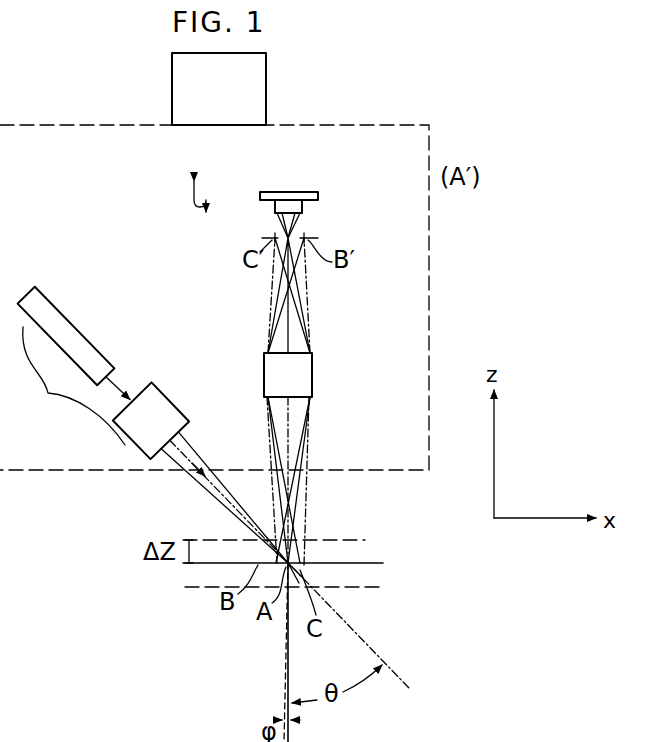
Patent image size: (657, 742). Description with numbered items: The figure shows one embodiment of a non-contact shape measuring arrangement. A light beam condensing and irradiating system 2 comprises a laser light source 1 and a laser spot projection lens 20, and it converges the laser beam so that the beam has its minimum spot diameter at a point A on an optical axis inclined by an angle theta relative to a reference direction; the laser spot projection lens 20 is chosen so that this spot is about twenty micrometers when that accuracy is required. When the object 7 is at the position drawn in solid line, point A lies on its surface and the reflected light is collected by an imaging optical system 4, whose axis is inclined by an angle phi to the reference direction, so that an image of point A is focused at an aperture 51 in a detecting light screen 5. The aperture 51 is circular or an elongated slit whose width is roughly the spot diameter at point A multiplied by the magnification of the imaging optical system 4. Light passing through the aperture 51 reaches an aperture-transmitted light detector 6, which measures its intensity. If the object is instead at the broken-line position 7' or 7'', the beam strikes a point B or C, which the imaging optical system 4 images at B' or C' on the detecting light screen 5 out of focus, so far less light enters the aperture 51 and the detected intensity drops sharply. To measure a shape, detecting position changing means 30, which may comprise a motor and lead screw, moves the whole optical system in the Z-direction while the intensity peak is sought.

The laser light source 1 is at (50, 300).
The light beam condensing and irradiating system 2 is at (74, 386).
The laser spot projection lens 20 is at (160, 384).
The imaging optical system 4 is at (313, 360).
The detecting light screen 5 is at (306, 233).
The aperture 51 is at (292, 230).
The aperture-transmitted light detector 6 is at (298, 192).
The object 7 is at (298, 548).
The object at displaced position 7' is at (291, 523).
The object at displaced position 7'' is at (308, 576).
The detecting position changing means 30 is at (266, 78).